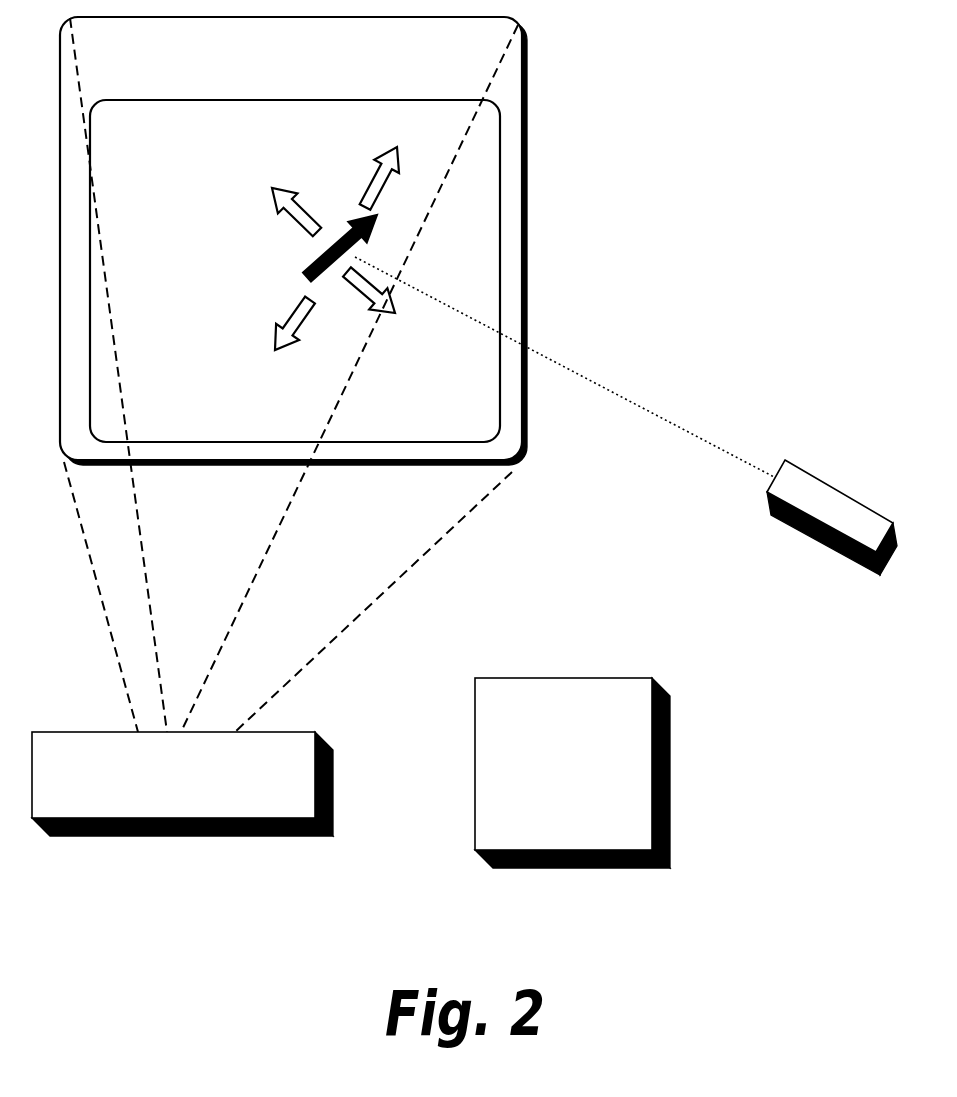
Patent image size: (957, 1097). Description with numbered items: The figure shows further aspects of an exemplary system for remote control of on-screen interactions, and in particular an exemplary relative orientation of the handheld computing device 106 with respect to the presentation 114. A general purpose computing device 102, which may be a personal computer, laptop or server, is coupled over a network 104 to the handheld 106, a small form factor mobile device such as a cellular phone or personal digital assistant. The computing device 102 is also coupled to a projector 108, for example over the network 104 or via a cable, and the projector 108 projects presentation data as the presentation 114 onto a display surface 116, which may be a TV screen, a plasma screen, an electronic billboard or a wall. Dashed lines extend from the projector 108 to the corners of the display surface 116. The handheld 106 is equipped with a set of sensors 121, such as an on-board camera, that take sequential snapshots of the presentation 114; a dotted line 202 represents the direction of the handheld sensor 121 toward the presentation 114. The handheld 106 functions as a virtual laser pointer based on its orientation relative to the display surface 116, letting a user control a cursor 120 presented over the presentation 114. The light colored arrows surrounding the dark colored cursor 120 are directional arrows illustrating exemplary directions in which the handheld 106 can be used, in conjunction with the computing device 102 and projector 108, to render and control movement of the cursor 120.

The display surface 116 is at (380, 50).
The presentation 114 is at (367, 133).
The cursor 120 is at (318, 263).
The projector 108 is at (156, 801).
The line representing handheld sensor direction 202 is at (562, 362).
The sensors 121 is at (735, 517).
The handheld computing device 106 is at (810, 515).
The general purpose computing device 102 is at (545, 778).
The network 104 is at (746, 659).